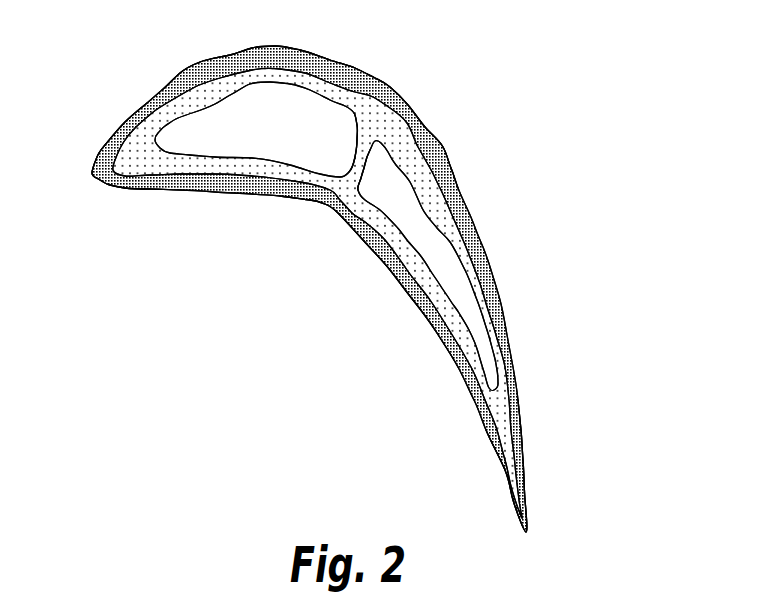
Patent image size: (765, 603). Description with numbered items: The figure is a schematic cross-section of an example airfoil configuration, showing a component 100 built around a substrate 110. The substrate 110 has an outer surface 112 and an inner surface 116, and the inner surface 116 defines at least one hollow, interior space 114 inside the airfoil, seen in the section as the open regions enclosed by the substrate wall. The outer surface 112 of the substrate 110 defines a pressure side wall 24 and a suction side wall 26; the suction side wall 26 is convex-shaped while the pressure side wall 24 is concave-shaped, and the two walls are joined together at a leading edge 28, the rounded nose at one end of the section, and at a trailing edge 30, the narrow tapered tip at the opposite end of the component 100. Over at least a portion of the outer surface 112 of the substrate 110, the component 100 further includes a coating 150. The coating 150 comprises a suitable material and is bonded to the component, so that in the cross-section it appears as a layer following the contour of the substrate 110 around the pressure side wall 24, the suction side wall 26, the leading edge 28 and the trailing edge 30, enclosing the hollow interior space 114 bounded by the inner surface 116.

The component 100 is at (541, 40).
The substrate 110 is at (368, 115).
The outer surface 112 is at (477, 333).
The hollow interior space 114 is at (287, 105).
The inner surface 116 is at (413, 183).
The coating 150 is at (455, 198).
The pressure side wall 24 is at (362, 237).
The suction side wall 26 is at (412, 120).
The leading edge 28 is at (92, 175).
The trailing edge 30 is at (526, 532).